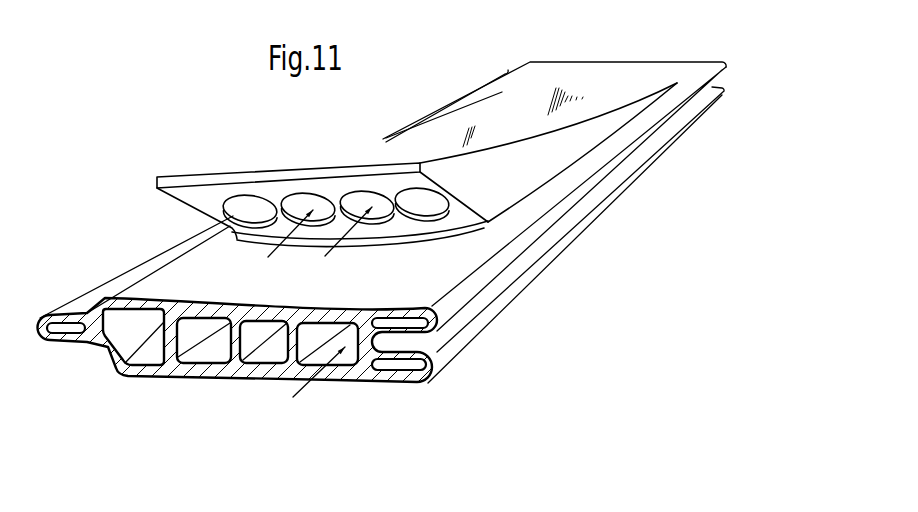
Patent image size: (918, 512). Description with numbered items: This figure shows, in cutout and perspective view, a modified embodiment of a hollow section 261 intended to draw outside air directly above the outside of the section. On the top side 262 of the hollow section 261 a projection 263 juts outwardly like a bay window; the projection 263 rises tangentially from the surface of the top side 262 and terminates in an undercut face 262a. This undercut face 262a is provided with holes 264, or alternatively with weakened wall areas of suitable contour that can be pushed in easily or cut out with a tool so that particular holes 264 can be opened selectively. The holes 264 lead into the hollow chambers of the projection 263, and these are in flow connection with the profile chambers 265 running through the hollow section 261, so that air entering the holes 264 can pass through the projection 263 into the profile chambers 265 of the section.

The hollow section 261 is at (92, 256).
The top side 262 is at (155, 289).
The undercut face 262a is at (473, 213).
The projection 263 is at (322, 162).
The holes 264 is at (247, 208).
The profile chambers 265 is at (146, 358).